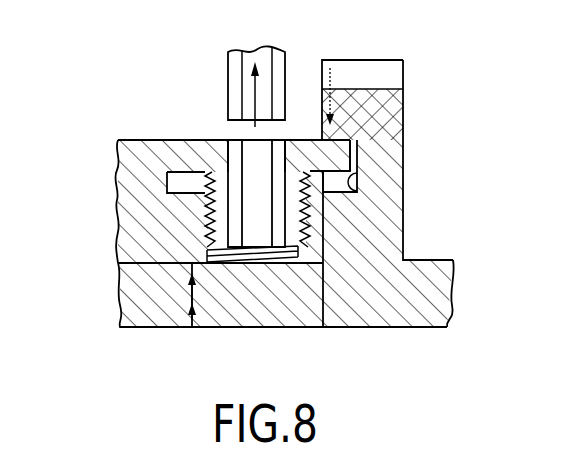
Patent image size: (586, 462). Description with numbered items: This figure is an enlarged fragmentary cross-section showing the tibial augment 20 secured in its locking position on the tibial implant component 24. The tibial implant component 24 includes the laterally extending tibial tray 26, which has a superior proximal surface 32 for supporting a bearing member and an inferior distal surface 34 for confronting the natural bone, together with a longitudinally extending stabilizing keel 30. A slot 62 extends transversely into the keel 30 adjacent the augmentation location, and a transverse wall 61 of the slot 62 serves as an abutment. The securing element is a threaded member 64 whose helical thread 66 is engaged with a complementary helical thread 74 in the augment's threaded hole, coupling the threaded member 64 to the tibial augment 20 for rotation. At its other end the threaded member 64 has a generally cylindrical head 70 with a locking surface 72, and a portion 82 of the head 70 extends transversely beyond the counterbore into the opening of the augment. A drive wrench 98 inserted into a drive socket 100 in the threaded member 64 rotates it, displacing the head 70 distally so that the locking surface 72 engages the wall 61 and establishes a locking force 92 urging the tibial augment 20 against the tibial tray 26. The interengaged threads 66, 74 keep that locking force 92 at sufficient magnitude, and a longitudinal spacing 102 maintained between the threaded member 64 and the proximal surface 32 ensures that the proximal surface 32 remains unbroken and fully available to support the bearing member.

The tibial augment 20 is at (113, 138).
The tibial implant component 24 is at (461, 258).
The tibial tray 26 is at (135, 278).
The stabilizing keel 30 is at (405, 236).
The proximal surface 32 is at (210, 328).
The distal surface 34 is at (132, 252).
The transverse wall 61 is at (356, 142).
The slot 62 is at (403, 210).
The threaded member 64 is at (160, 159).
The helical thread 66 is at (365, 275).
The head 70 is at (178, 160).
The locking surface 72 is at (334, 138).
The complementary helical thread 74 is at (281, 248).
The portion of the head 82 is at (360, 150).
The locking force 92 is at (331, 78).
The drive wrench 98 is at (281, 66).
The drive socket 100 is at (234, 142).
The longitudinal spacing 102 is at (190, 290).